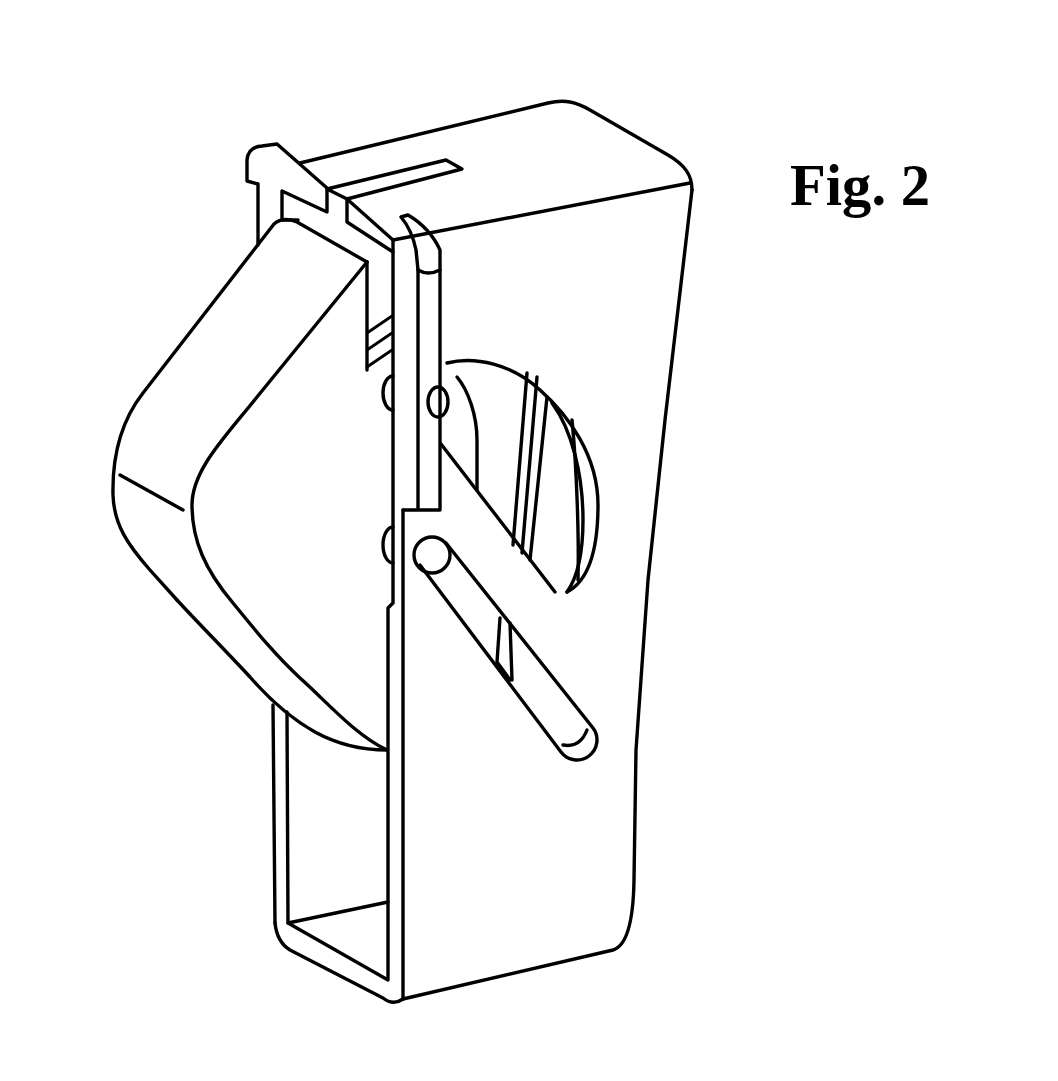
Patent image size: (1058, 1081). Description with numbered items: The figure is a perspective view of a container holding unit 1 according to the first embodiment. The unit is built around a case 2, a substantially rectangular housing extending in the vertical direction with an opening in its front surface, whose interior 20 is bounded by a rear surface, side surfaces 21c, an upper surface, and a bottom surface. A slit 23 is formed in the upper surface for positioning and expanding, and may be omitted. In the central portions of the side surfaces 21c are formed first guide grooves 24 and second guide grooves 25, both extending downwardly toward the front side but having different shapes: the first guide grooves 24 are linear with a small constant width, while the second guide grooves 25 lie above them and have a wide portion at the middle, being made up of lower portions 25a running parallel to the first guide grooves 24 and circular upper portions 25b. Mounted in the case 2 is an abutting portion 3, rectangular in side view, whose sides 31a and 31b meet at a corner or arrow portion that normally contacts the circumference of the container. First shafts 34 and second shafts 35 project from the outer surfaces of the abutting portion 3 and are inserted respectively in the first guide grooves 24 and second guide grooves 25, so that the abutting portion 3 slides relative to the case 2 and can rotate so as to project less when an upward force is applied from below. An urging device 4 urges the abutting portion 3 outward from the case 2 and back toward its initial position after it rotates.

The container holding unit 1 is at (97, 49).
The case 2 is at (251, 154).
The abutting portion 3 is at (216, 436).
The urging device 4 is at (468, 371).
The interior 20 is at (300, 847).
The side surfaces 21c is at (617, 828).
The slit 23 is at (419, 173).
The first guide grooves 24 is at (565, 700).
The second guide grooves 25 is at (807, 437).
The lower portions 25a is at (458, 595).
The upper portions 25b is at (585, 466).
The side 31a is at (177, 383).
The side 31b is at (223, 633).
The first shafts 34 is at (423, 562).
The second shafts 35 is at (449, 380).